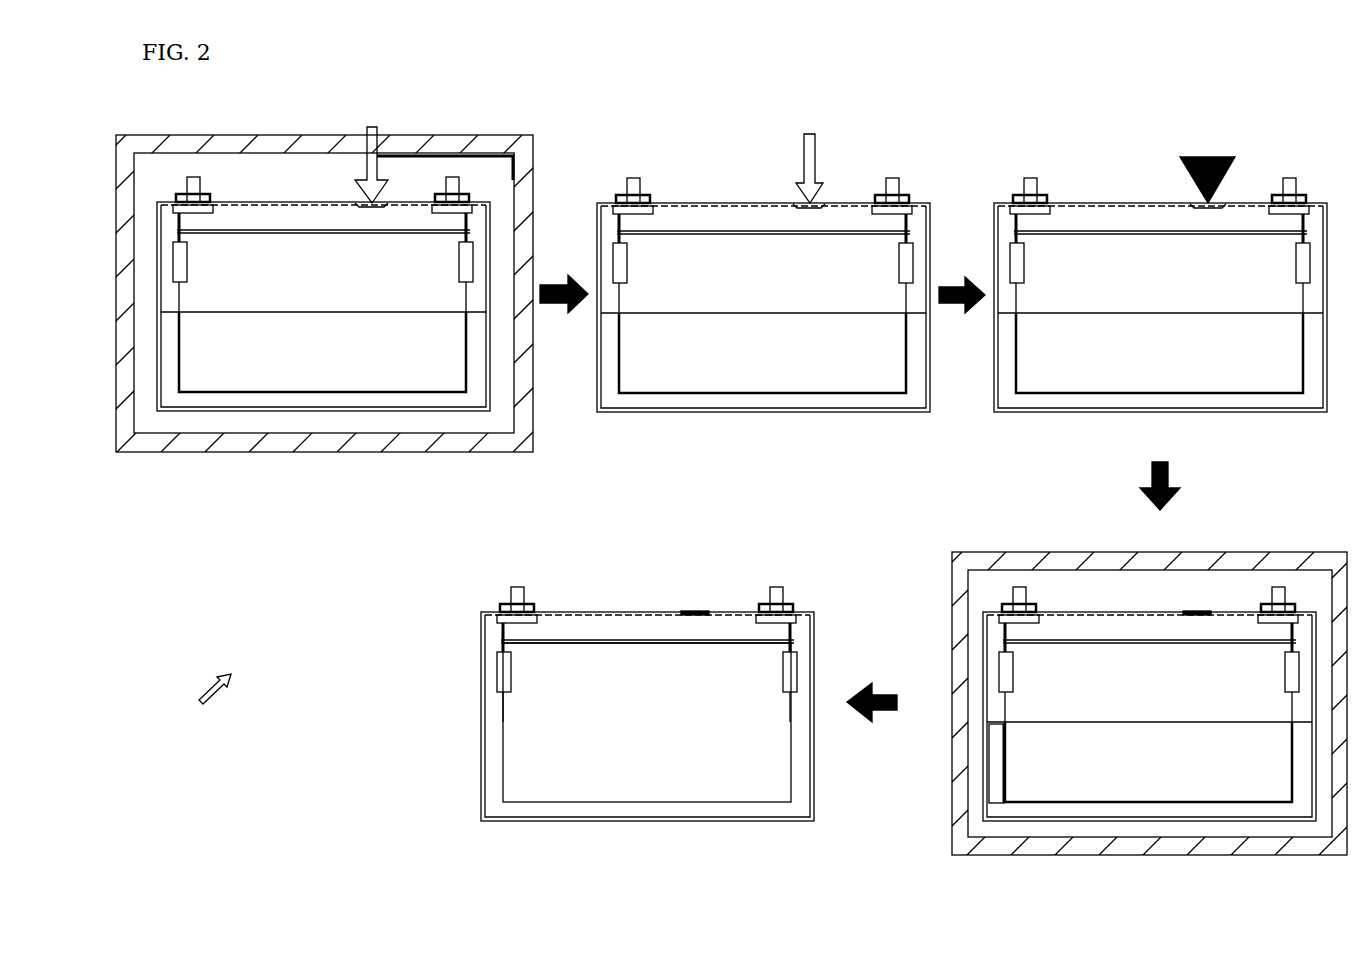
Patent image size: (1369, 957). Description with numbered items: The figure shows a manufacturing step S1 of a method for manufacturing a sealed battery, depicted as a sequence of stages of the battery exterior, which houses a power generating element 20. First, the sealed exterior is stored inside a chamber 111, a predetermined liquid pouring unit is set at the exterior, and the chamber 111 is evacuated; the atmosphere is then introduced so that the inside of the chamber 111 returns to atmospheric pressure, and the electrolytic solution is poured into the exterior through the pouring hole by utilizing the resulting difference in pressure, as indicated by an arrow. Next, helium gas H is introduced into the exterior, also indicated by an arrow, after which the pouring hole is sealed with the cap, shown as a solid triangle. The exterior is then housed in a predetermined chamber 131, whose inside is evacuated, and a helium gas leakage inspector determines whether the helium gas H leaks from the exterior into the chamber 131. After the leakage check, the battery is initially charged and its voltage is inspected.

The chamber 111 is at (193, 453).
The chamber 131 is at (988, 558).
The power generating element 20 is at (520, 755).
The helium gas H is at (803, 163).
The manufacturing step S1 is at (199, 703).